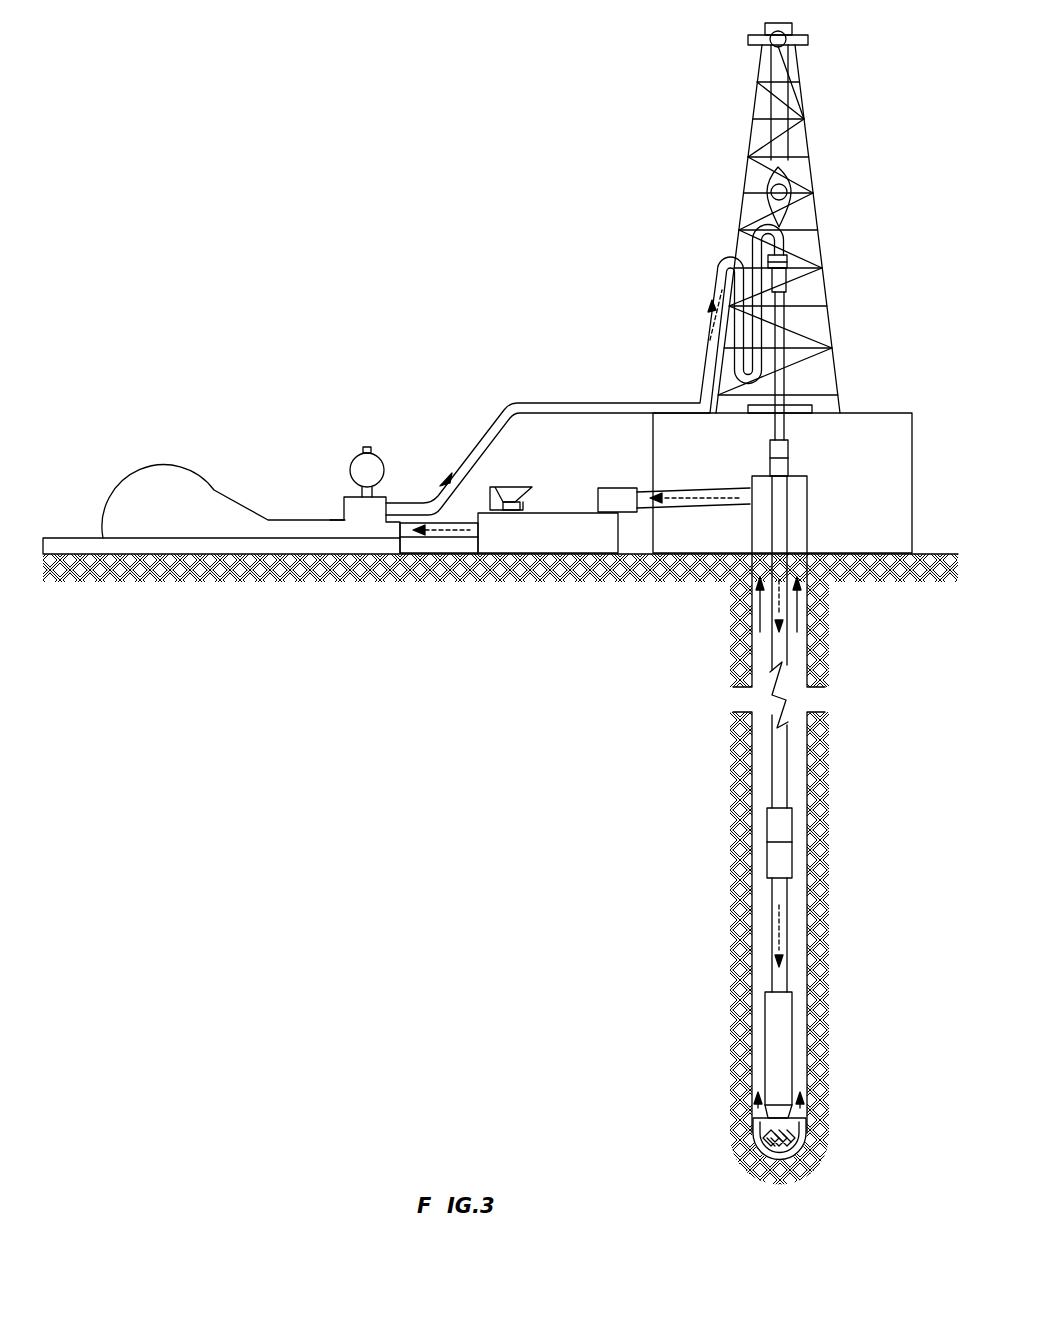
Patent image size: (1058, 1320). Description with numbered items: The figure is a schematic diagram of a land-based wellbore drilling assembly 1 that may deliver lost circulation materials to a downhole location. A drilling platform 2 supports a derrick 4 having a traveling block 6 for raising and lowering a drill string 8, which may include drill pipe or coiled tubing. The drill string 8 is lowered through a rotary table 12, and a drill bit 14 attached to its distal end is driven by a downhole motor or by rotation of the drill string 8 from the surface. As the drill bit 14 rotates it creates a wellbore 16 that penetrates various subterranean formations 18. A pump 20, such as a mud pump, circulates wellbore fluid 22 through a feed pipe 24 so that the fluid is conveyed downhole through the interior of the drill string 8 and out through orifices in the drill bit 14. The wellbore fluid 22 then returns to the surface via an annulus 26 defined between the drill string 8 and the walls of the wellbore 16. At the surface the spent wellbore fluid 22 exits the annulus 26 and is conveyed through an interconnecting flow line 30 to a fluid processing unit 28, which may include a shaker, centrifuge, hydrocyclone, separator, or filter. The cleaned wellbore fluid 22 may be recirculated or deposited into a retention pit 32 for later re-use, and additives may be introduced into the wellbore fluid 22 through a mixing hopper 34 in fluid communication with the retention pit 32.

The wellbore drilling assembly 1 is at (475, 125).
The drilling platform 2 is at (862, 461).
The derrick 4 is at (806, 140).
The traveling block 6 is at (797, 183).
The drill string 8 is at (805, 668).
The rotary table 12 is at (812, 412).
The drill bit 14 is at (800, 1128).
The wellbore 16 is at (806, 758).
The subterranean formations 18 is at (656, 818).
The pump 20 is at (168, 514).
The wellbore fluid 22 is at (433, 493).
The feed pipe 24 is at (608, 402).
The annulus 26 is at (798, 1018).
The fluid processing unit 28 is at (628, 488).
The interconnecting flow line 30 is at (736, 488).
The retention pit 32 is at (563, 545).
The mixing hopper 34 is at (510, 487).